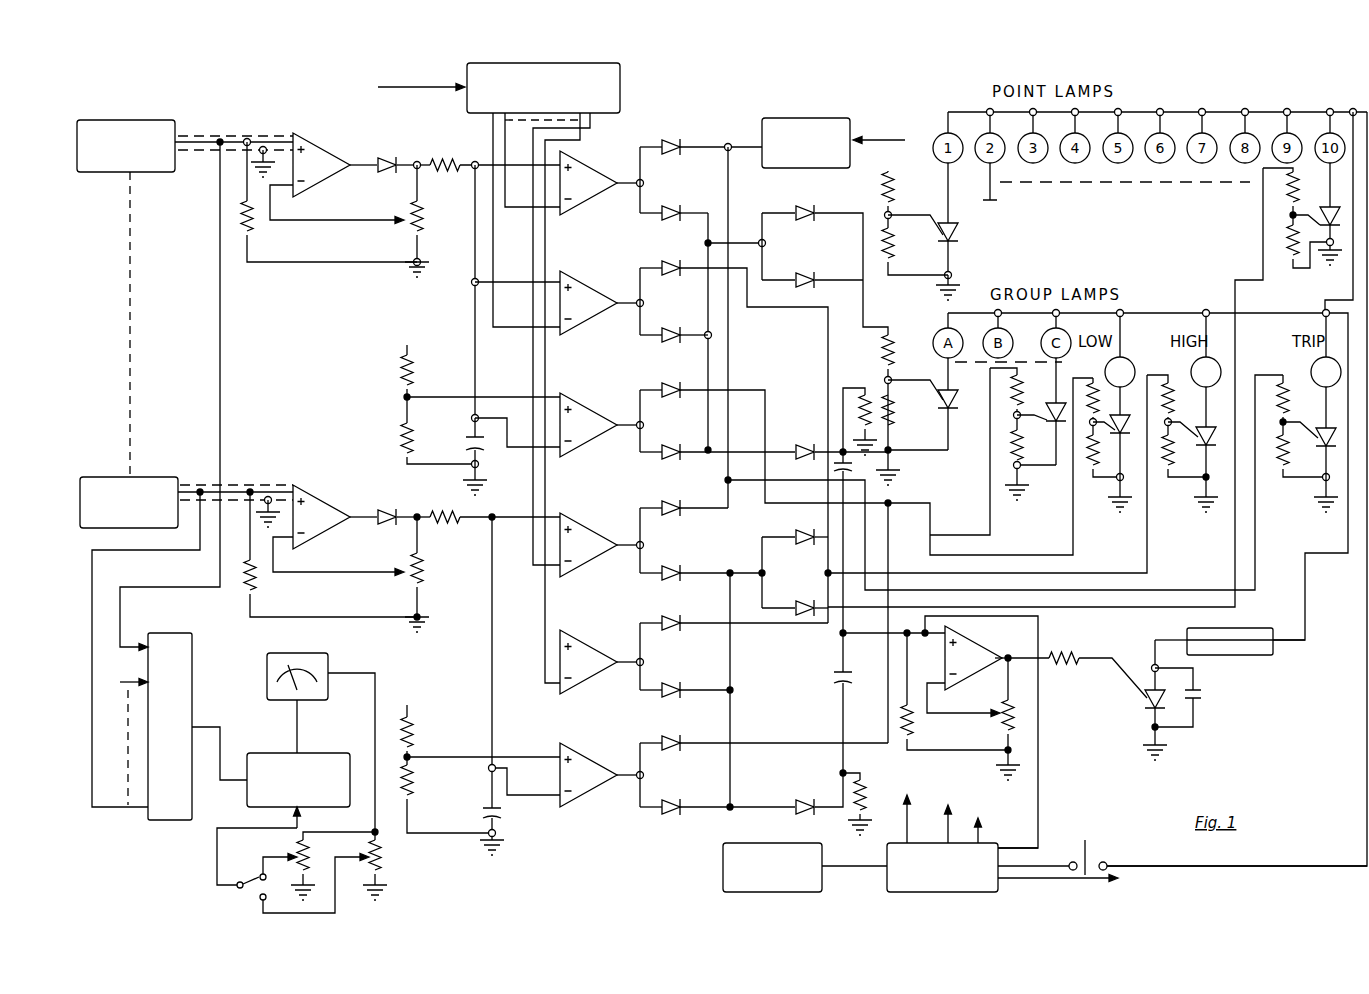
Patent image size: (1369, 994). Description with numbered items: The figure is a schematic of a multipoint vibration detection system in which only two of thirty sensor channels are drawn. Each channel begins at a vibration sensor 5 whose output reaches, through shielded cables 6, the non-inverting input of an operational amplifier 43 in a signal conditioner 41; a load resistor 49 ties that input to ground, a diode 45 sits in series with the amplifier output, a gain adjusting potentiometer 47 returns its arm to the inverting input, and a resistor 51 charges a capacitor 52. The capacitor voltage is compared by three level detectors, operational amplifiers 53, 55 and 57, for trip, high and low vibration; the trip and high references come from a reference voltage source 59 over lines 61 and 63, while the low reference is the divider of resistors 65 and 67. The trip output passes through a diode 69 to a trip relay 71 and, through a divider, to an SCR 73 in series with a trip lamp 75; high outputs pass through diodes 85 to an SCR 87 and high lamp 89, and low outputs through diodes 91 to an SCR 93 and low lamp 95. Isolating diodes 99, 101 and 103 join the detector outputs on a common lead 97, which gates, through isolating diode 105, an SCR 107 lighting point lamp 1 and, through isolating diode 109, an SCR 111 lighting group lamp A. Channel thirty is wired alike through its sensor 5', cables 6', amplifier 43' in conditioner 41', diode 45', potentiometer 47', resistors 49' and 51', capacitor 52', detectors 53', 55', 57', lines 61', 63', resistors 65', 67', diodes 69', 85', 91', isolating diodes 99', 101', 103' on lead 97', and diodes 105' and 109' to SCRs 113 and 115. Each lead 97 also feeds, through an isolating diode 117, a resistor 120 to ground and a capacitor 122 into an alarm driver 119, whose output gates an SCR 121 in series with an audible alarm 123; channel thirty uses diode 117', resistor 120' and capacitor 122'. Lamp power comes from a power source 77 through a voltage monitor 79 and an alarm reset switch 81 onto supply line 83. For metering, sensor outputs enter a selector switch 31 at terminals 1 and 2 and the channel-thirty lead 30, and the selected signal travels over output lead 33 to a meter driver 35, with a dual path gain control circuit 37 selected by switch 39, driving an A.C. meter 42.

The vibration sensor 5 is at (126, 285).
The shielded cables 6 is at (234, 144).
The operational amplifier 43 is at (322, 164).
The signal conditioner 41 is at (337, 204).
The diode 45 is at (385, 147).
The gain adjusting potentiometer 47 is at (430, 221).
The load resistor 49 is at (329, 201).
The resistor 51 is at (490, 270).
The reference voltage source 59 is at (622, 66).
The line 61 is at (532, 160).
The line 63 is at (513, 220).
The reference voltage line 61' is at (579, 389).
The reference voltage line 63' is at (582, 339).
The operational amplifier 53 is at (602, 190).
The operational amplifier 55 is at (602, 310).
The operational amplifier 57 is at (602, 432).
The resistor 65 is at (476, 363).
The resistor 67 is at (438, 430).
The capacitor 52 is at (511, 455).
The diode 69 is at (701, 311).
The isolating diode 99 is at (674, 200).
The common lead 97 is at (734, 317).
The diode 85 is at (734, 429).
The isolating diode 101 is at (674, 323).
The diode 91 is at (866, 456).
The isolating diode 103 is at (717, 440).
The isolating diode 105 is at (825, 257).
The isolating diode 109 is at (812, 267).
The isolating diode 117 is at (833, 440).
The resistor 120 is at (856, 407).
The capacitor 122 is at (814, 542).
The trip relay 71 is at (815, 117).
The SCR 107 is at (958, 238).
The SCR 113 is at (1322, 210).
The SCR 111 is at (956, 414).
The SCR 115 is at (998, 446).
The SCR 93 is at (1128, 427).
The SCR 87 is at (1210, 447).
The SCR 73 is at (1314, 444).
The low vibration indicator lamp 95 is at (1105, 372).
The high vibration indicator lamp 89 is at (1191, 372).
The trip lamp 75 is at (1312, 368).
The No. 30 sensor 5' is at (129, 486).
The sensor leads 6' is at (235, 493).
The operational amplifier 43' is at (322, 516).
The feedback loop 41' is at (338, 556).
The diode 45' is at (385, 502).
The potentiometer 47' is at (432, 574).
The resistor 49' is at (330, 553).
The resistor 51' is at (490, 501).
The trip comparator 53' is at (602, 552).
The high comparator 55' is at (602, 670).
The low comparator 57' is at (602, 782).
The resistor 65' is at (476, 723).
The resistor 67' is at (446, 795).
The capacitor 52' is at (520, 686).
The diode 69' is at (684, 497).
The diode 99' is at (702, 561).
The line 97' is at (744, 691).
The diode 85' is at (734, 611).
The diode 101' is at (685, 679).
The diode 91' is at (764, 731).
The diode 103' is at (717, 795).
The isolating diode 105' is at (795, 599).
The isolating diode 109' is at (789, 530).
The diode 117' is at (812, 792).
The resistor 120' is at (836, 807).
The capacitor 122' is at (813, 703).
The alarm driver 119 is at (969, 732).
The SCR 121 is at (1143, 702).
The audible alarm 123 is at (1230, 627).
The power supply line 83 is at (1360, 695).
The alarm reset switch 81 is at (1108, 860).
The voltage monitor 79 is at (922, 843).
The system power source 77 is at (723, 858).
The selector switch 31 is at (194, 666).
The output lead 33 is at (217, 727).
The meter driver 35 is at (318, 752).
The A.C. meter 42 is at (330, 672).
The dual path gain control circuit 37 is at (325, 871).
The switch 39 is at (252, 876).
The line 30 is at (147, 660).
The point lamp 1 is at (171, 395).
The point indicator lamp 2 is at (134, 733).